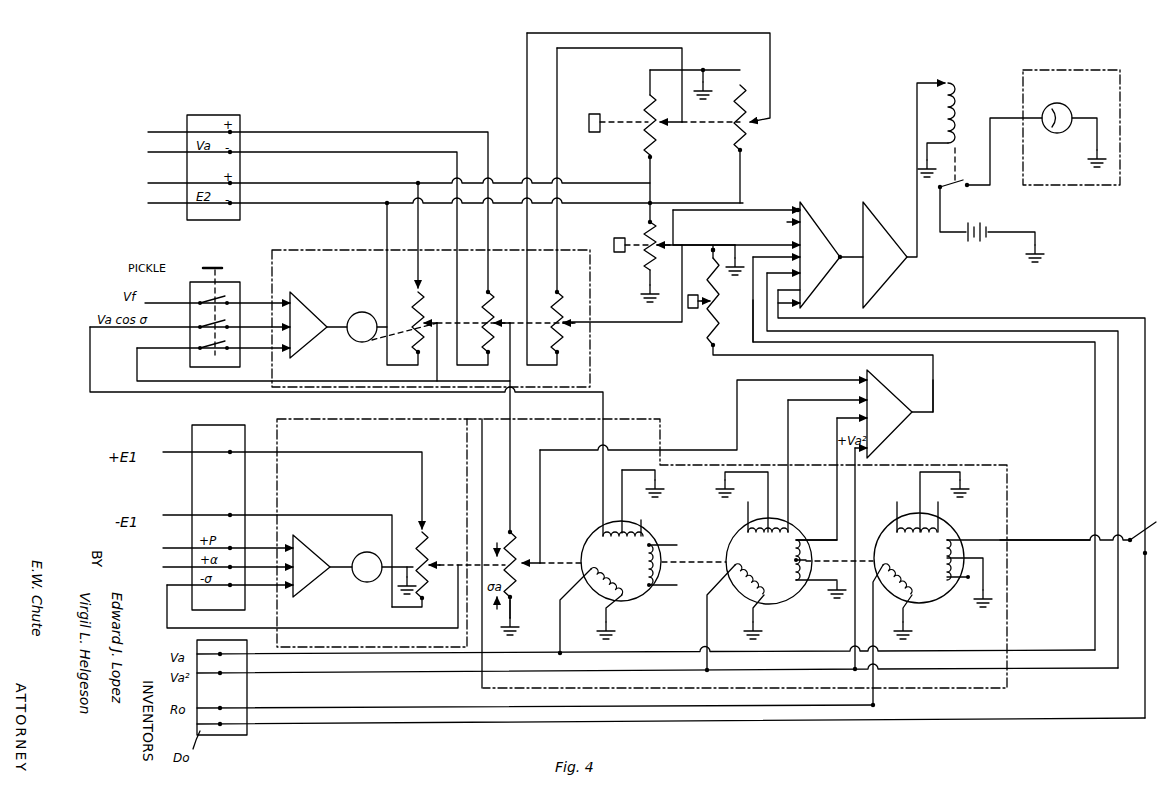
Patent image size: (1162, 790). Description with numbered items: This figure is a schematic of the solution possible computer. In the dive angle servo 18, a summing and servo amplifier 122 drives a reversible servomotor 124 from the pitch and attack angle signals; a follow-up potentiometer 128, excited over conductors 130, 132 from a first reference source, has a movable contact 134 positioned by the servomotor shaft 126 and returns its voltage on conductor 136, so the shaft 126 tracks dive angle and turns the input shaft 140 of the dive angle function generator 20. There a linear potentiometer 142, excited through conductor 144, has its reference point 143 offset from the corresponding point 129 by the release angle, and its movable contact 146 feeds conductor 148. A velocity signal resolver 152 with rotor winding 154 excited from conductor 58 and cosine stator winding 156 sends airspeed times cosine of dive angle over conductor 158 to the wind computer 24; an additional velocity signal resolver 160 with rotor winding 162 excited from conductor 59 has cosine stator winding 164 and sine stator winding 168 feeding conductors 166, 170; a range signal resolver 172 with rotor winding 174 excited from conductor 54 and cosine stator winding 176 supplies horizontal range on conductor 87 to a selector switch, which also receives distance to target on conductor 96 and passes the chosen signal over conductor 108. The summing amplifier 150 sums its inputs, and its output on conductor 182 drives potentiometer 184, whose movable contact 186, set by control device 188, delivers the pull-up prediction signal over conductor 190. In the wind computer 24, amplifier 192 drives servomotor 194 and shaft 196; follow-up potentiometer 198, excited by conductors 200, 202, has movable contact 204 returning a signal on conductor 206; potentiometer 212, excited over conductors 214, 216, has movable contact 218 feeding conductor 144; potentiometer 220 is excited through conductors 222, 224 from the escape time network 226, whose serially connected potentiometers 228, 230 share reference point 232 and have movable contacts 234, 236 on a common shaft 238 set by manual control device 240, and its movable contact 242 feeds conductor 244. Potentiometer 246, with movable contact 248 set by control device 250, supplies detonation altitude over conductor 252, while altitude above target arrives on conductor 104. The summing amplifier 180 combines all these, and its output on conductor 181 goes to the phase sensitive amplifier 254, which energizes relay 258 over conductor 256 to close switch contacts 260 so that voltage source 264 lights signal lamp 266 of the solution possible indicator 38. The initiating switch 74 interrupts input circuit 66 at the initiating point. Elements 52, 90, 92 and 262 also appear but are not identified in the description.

The dive angle servo 18 is at (300, 418).
The dive angle function generator 20 is at (655, 420).
The wind computer 24 is at (385, 250).
The solution possible indicator 38 is at (1072, 68).
The input line 52 is at (180, 567).
The conductor 54 is at (677, 710).
The conductor 58 is at (979, 344).
The conductor 59 is at (1032, 333).
The input circuit 66 is at (189, 299).
The initiating switch 74 is at (222, 268).
The conductor 87 is at (1045, 542).
The switch 90 is at (1146, 543).
The switch contact 92 is at (1139, 598).
The conductor 96 is at (568, 728).
The conductor 104 is at (752, 222).
The conductor 108 is at (986, 318).
The summing and servo amplifier 122 is at (299, 548).
The reversible servomotor 124 is at (380, 542).
The servomotor shaft 126 is at (383, 579).
The follow-up potentiometer 128 is at (423, 529).
The point on follow-up potentiometer 129 is at (423, 593).
The conductor 130 is at (180, 437).
The conductor 132 is at (178, 500).
The movable contact 134 is at (430, 562).
The conductor 136 is at (292, 628).
The input shaft 140 is at (581, 560).
The linear potentiometer 142 is at (509, 534).
The point of reference potential 143 is at (513, 616).
The conductor 144 is at (513, 434).
The movable contact 146 is at (523, 566).
The conductor 148 is at (712, 450).
The summing amplifier 150 is at (880, 389).
The velocity signal resolver 152 is at (641, 533).
The rotor winding 154 is at (618, 599).
The cosine function stator winding 156 is at (598, 568).
The conductor 158 is at (603, 394).
The additional velocity signal resolver 160 is at (742, 598).
The rotor winding 162 is at (755, 603).
The cosine function stator winding 164 is at (800, 584).
The conductor 166 is at (836, 494).
The sine function stator winding 168 is at (763, 537).
The conductor 170 is at (786, 448).
The range signal resolver 172 is at (936, 522).
The rotor winding 174 is at (914, 601).
The cosine function stator winding 176 is at (957, 545).
The summing amplifier 180 is at (812, 282).
The conductor 181 is at (851, 257).
The conductor 182 is at (934, 386).
The potentiometer 184 is at (713, 348).
The movable contact 186 is at (752, 302).
The manually adjustable control device 188 is at (692, 309).
The conductor 190 is at (753, 300).
The summing and servo amplifier 192 is at (297, 309).
The reversible servomotor 194 is at (374, 299).
The servo output shaft 196 is at (372, 341).
The follow-up potentiometer 198 is at (420, 289).
The conductor 200 is at (262, 183).
The conductor 202 is at (289, 205).
The movable contact 204 is at (433, 322).
The conductor 206 is at (137, 377).
The potentiometer 212 is at (490, 291).
The conductor 214 is at (420, 130).
The conductor 216 is at (311, 152).
The movable contact 218 is at (497, 322).
The potentiometer 220 is at (562, 293).
The conductor 222 is at (559, 100).
The conductor 224 is at (525, 96).
The escape time potentiometer network 226 is at (646, 71).
The potentiometer 228 is at (648, 157).
The potentiometer 230 is at (743, 152).
The point of reference potential 232 is at (704, 70).
The movable contact 234 is at (669, 128).
The movable contact 236 is at (762, 125).
The common shaft 238 is at (700, 124).
The manual control device 240 is at (600, 121).
The movable contact 242 is at (580, 326).
The conductor 244 is at (664, 322).
The potentiometer 246 is at (647, 220).
The movable contact 248 is at (699, 261).
The manual control device 250 is at (614, 252).
The conductor 252 is at (768, 206).
The phase sensitive amplifier 254 is at (893, 272).
The conductor 256 is at (926, 80).
The relay 258 is at (952, 90).
The switch contacts 260 is at (958, 190).
The connecting line 262 is at (1006, 100).
The voltage source 264 is at (991, 225).
The signal lamp 266 is at (1067, 107).